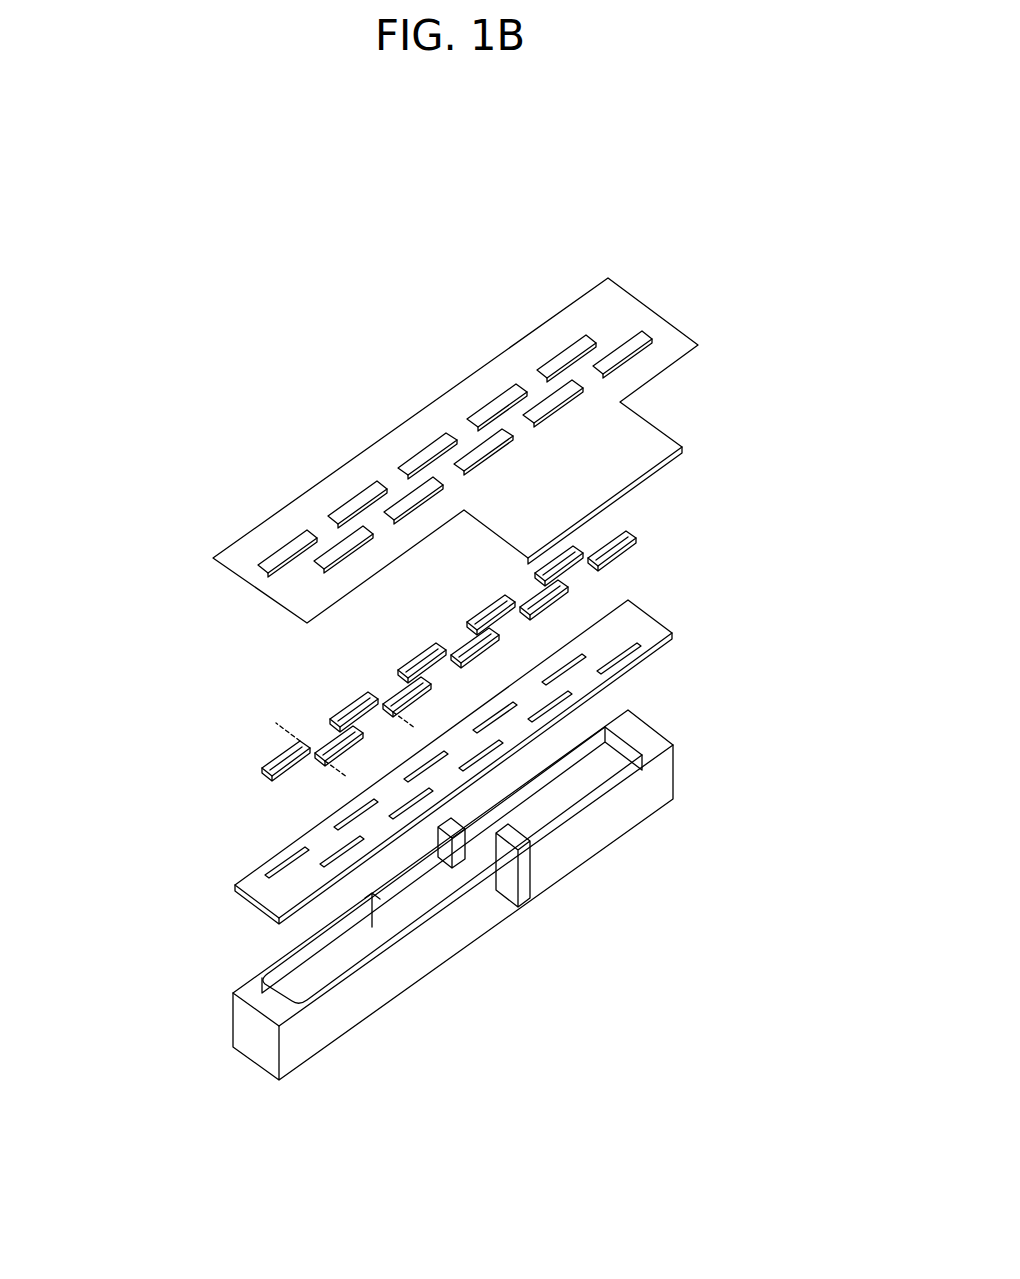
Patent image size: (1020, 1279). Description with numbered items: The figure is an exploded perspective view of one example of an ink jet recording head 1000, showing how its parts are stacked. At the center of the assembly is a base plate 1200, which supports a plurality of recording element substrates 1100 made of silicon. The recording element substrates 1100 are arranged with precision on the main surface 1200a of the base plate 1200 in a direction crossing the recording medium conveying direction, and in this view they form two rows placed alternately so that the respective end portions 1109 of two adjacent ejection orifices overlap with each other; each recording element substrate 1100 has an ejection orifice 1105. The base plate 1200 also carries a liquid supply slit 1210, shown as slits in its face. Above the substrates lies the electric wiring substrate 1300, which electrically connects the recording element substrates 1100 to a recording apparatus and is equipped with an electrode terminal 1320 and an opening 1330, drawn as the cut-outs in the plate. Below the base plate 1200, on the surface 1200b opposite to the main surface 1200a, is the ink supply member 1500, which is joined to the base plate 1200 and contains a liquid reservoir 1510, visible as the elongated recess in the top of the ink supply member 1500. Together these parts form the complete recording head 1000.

The ink jet recording head 1000 is at (183, 305).
The recording element substrates 1100 is at (632, 531).
The ejection orifice 1105 is at (270, 768).
The end portions 1109 is at (293, 733).
The base plate 1200 is at (235, 885).
The main surface 1200a is at (646, 621).
The surface opposite to the main surface 1200b is at (672, 638).
The liquid supply slit 1210 is at (640, 644).
The electric wiring substrate 1300 is at (615, 298).
The electrode terminal 1320 is at (267, 565).
The opening 1330 is at (558, 362).
The ink supply member 1500 is at (475, 918).
The liquid reservoir 1510 is at (440, 900).